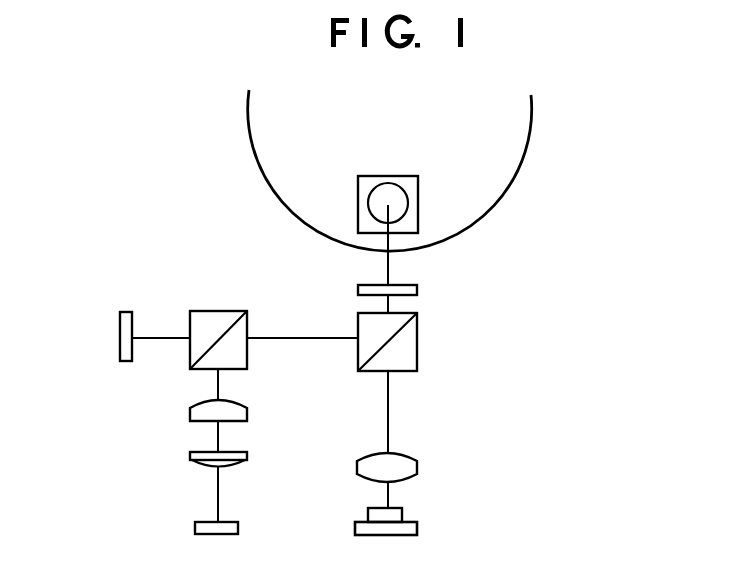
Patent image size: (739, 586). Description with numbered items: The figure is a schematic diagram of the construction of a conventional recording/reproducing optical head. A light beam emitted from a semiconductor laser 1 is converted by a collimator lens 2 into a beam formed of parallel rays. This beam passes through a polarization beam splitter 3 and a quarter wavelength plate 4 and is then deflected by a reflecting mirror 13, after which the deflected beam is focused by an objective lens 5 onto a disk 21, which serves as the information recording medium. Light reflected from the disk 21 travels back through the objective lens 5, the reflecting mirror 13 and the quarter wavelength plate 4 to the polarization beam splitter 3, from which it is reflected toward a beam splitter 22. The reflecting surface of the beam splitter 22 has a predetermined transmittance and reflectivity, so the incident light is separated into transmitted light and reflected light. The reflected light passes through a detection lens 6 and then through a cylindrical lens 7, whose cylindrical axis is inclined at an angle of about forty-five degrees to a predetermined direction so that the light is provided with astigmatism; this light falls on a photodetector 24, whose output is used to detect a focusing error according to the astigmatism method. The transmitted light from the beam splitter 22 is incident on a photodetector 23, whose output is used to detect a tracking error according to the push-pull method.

The semiconductor laser 1 is at (402, 515).
The collimator lens 2 is at (417, 462).
The polarization beam splitter 3 is at (417, 345).
The quarter wavelength plate 4 is at (417, 290).
The objective lens 5 is at (410, 185).
The reflecting mirror 13 is at (418, 213).
The disk 21 is at (248, 129).
The beam splitter 22 is at (217, 309).
The photodetector 23 is at (126, 308).
The photodetector 24 is at (195, 528).
The detection lens 6 is at (190, 415).
The cylindrical lens 7 is at (190, 457).